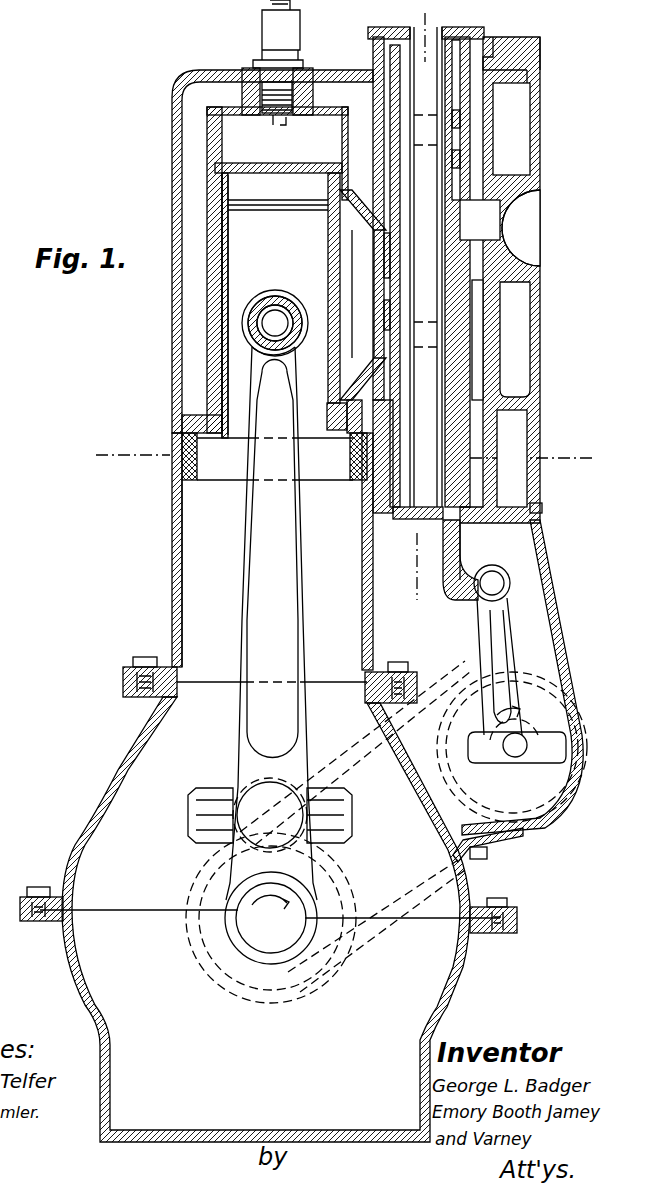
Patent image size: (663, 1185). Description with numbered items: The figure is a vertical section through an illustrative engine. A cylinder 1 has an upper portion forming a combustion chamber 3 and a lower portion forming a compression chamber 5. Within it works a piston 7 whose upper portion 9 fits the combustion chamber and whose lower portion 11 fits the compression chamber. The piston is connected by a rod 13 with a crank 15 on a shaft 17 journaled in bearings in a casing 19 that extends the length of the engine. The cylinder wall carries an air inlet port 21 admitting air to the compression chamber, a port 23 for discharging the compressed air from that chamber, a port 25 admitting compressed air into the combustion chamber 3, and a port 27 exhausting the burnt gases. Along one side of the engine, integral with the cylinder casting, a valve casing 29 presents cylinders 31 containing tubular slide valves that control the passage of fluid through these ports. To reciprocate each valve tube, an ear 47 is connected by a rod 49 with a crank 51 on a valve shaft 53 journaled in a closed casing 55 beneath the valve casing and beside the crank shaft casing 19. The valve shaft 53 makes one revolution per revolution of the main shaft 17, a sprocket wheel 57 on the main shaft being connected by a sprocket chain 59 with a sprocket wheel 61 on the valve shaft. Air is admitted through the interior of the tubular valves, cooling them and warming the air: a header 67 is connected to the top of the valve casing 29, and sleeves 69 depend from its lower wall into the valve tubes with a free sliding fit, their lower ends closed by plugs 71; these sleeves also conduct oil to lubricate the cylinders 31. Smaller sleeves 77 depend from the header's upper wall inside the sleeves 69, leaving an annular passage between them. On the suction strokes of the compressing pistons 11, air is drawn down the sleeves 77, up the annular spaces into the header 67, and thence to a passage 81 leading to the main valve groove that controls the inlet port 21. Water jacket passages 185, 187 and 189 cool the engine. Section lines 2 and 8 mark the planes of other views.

The cylinder 1 is at (180, 505).
The section line 2-2 / valve stem axis 2 is at (420, 315).
The combustion chamber 3 is at (235, 135).
The compression chamber 5 is at (215, 528).
The piston 7 is at (240, 272).
The section line 8- 8 is at (342, 459).
The upper portion of piston 9 is at (218, 212).
The lower portion of piston 11 is at (185, 430).
The rod 13 is at (265, 572).
The crank 15 is at (228, 862).
The shaft 17 is at (245, 920).
The casing 19 is at (75, 833).
The air inlet port 21 is at (362, 487).
The port 23 is at (318, 398).
The port 25 is at (355, 160).
The port 27 is at (355, 222).
The valve casing 29 is at (500, 350).
The cylinders 31 is at (468, 318).
The ear 47 is at (468, 566).
The rod 49 is at (505, 640).
The crank 51 is at (545, 812).
The valve shaft 53 is at (556, 760).
The casing 55 is at (575, 690).
The sprocket wheel 57 is at (365, 945).
The sprocket chain 59 is at (480, 855).
The sprocket wheel 61 is at (572, 792).
The header 67 is at (455, 31).
The sleeves 69 is at (460, 285).
The plugs 71 is at (372, 592).
The sleeves 77 is at (370, 532).
The passage 81 is at (508, 432).
The water jacket passage 185 is at (190, 352).
The water jacket passage 187 is at (366, 287).
The water jacket passage 189 is at (478, 380).